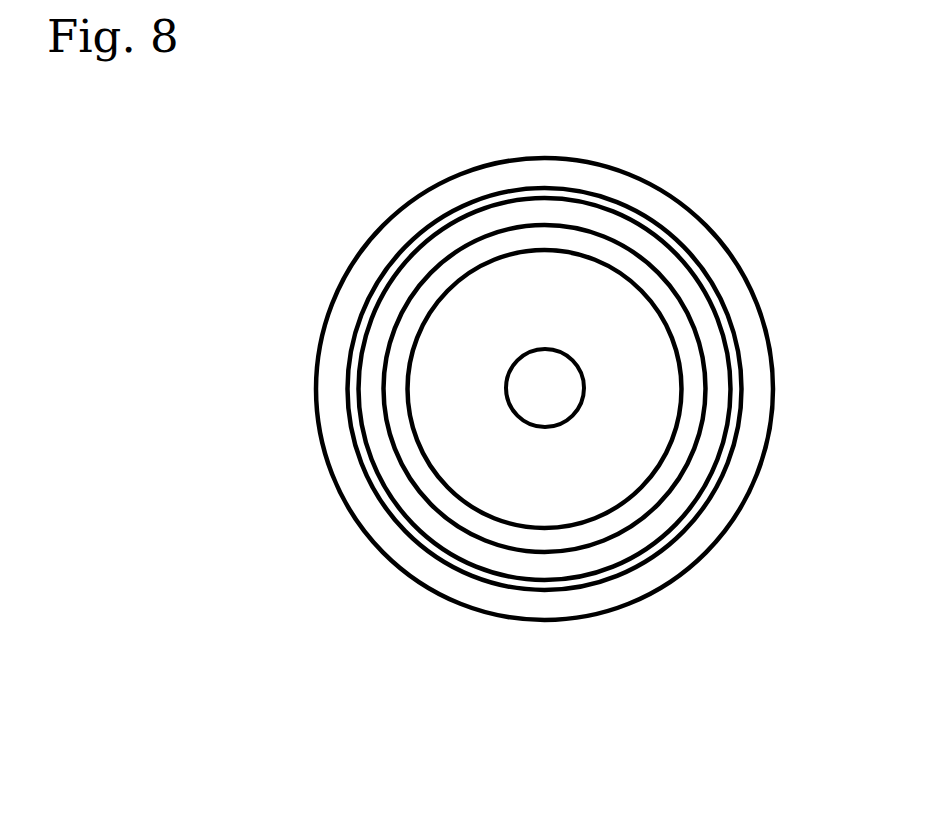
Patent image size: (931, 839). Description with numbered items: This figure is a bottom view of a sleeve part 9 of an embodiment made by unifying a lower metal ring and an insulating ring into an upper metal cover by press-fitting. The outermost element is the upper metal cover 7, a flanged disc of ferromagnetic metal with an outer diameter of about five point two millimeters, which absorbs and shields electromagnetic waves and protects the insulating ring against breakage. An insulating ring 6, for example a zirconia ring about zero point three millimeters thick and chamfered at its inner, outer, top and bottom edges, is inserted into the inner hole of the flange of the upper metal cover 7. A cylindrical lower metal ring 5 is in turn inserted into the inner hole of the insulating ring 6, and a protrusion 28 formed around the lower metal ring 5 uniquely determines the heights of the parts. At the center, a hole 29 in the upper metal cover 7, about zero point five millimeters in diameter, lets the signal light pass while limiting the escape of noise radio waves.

The heat exchanger assembly 9 is at (342, 225).
The upper metal cover 7 is at (353, 313).
The insulating ring 6 is at (353, 382).
The lower metal ring 5 is at (407, 437).
The protrusion 28 is at (413, 505).
The hole 29 is at (545, 388).